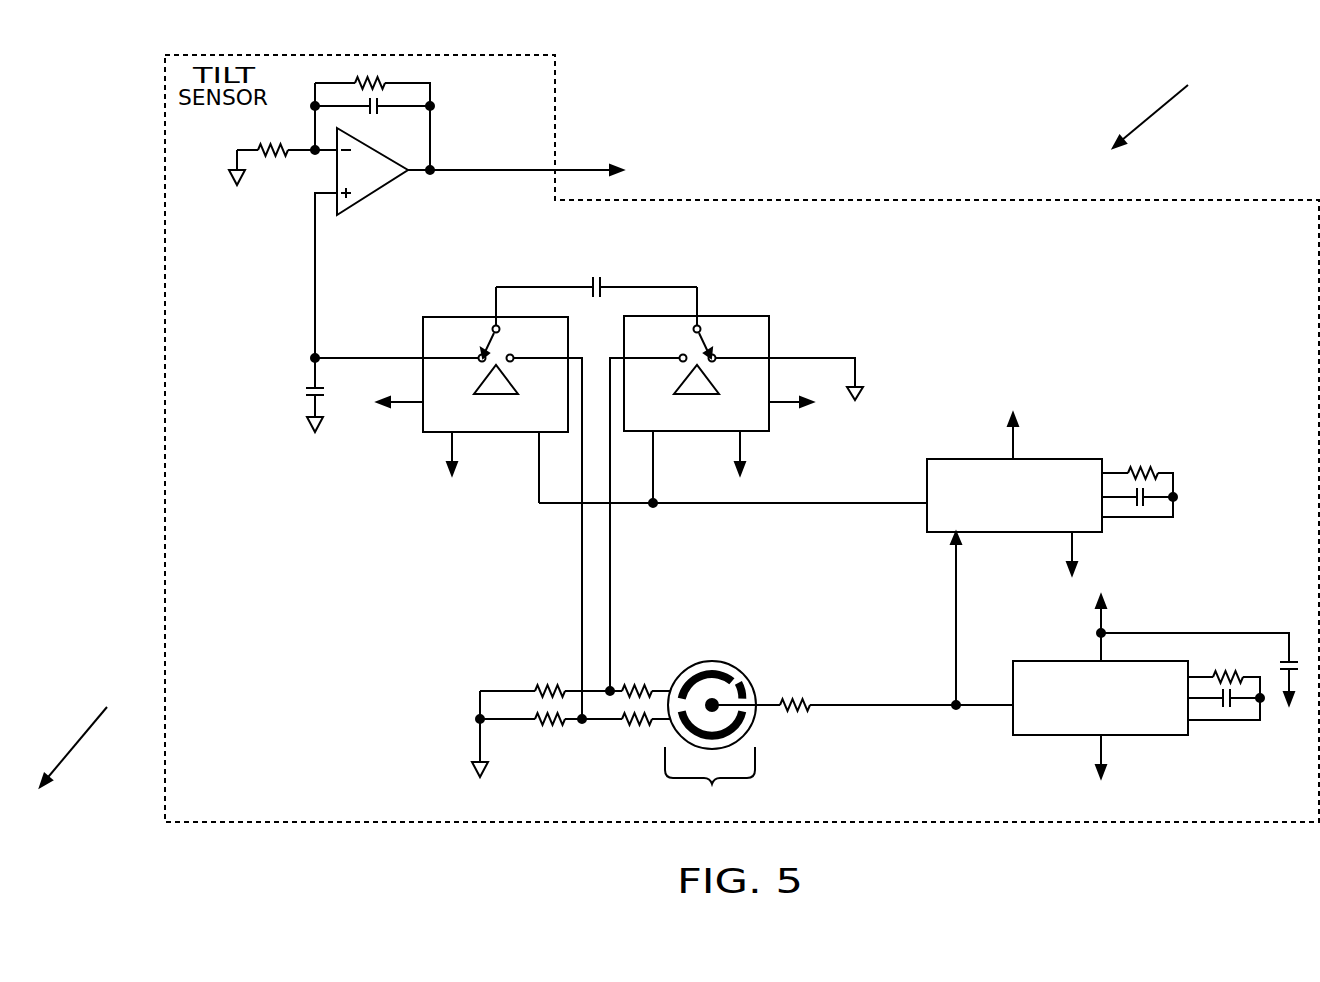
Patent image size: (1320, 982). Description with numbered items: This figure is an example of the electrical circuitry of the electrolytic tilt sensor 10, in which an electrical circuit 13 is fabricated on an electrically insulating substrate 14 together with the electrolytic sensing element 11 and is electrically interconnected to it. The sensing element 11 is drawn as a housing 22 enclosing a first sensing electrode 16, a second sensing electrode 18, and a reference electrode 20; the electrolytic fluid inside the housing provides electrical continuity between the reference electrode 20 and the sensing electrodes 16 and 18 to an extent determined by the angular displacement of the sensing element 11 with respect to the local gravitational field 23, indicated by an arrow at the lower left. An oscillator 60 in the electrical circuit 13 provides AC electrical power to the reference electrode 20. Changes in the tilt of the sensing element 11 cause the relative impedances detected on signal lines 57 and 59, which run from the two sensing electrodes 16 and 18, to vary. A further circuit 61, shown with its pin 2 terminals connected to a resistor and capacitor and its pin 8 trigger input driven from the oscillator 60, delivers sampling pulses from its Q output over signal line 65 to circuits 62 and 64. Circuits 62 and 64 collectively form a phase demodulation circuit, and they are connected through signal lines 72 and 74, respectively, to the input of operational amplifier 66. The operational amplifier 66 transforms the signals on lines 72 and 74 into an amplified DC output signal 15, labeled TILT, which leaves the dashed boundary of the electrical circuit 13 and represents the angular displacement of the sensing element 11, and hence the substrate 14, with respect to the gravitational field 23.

The electrolytic tilt sensor 10 is at (1167, 102).
The electrolytic sensing element 11 is at (812, 708).
The electrical circuit 13 is at (970, 200).
The electrically insulating substrate 14 is at (1250, 244).
The output signal 15 is at (583, 170).
The first sensing electrode 16 is at (712, 661).
The second sensing electrode 18 is at (684, 727).
The reference electrode 20 is at (712, 705).
The housing 22 is at (752, 727).
The local gravitational field 23 is at (72, 750).
The signal line 57 is at (582, 576).
The signal line 59 is at (610, 576).
The oscillator 60 is at (1030, 661).
The circuit 61 is at (1052, 553).
The circuit 62 is at (744, 316).
The circuit 64 is at (438, 317).
The signal line 65 is at (843, 503).
The operational amplifier 66 is at (388, 156).
The signal line 72 is at (637, 287).
The signal line 74 is at (315, 276).
The pin 2 RC terminal 2 is at (1139, 482).
The pin 8 trigger input 8 is at (965, 617).